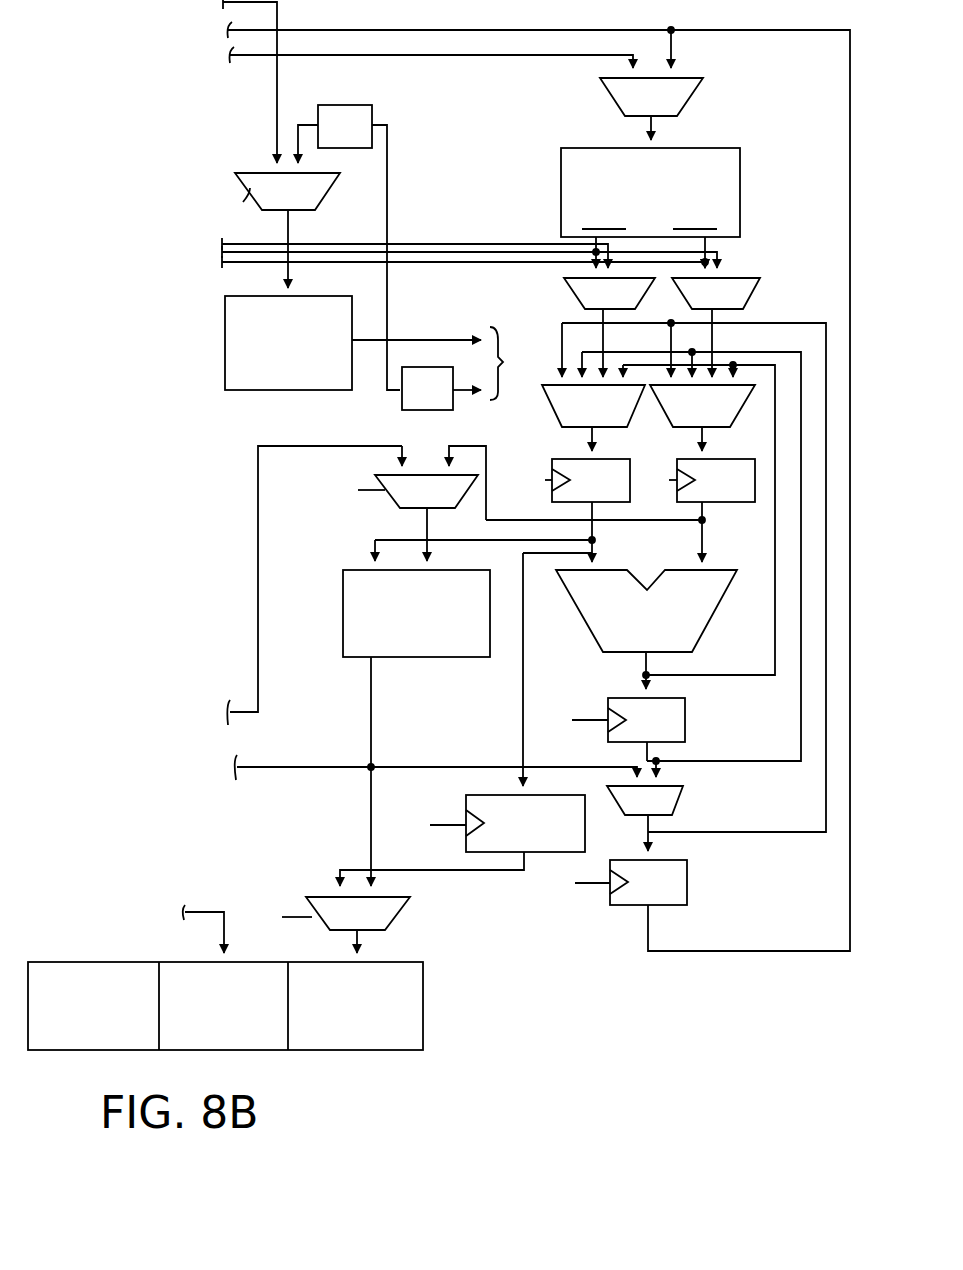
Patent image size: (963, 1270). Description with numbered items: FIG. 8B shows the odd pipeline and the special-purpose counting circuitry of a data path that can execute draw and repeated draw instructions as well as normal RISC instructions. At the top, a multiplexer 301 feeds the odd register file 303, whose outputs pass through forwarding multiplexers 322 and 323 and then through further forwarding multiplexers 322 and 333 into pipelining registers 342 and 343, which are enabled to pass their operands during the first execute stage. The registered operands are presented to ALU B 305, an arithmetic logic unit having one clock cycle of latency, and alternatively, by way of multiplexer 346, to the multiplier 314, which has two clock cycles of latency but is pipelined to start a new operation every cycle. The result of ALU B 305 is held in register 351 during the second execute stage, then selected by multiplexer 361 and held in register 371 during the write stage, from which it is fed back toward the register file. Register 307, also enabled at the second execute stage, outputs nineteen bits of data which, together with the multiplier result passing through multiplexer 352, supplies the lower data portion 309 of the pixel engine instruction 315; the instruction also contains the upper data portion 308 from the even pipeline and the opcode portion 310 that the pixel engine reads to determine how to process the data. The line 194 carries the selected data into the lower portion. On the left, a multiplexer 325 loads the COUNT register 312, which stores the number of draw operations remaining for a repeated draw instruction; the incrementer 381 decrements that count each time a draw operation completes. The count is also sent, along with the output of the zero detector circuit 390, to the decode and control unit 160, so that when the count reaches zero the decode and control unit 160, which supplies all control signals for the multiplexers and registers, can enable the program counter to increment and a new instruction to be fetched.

The decode and control unit 160 is at (497, 368).
The output line 194 is at (336, 946).
The multiplexer 301 is at (688, 108).
The odd register file 303 is at (740, 162).
The ALU B 305 is at (646, 629).
The register 307 is at (570, 851).
The upper data portion 308 is at (265, 1042).
The lower portion 309 is at (398, 1042).
The opcode portion 310 is at (135, 1042).
The COUNT register 312 is at (326, 383).
The multiplier 314 is at (405, 653).
The pixel engine instruction 315 is at (309, 977).
The multiplexer 322 is at (568, 294).
The multiplexer 323 is at (755, 292).
The multiplexer 325 is at (327, 190).
The multiplexer 333 is at (745, 406).
The register 342 is at (606, 460).
The register 343 is at (705, 460).
The multiplexer 346 is at (468, 500).
The register 351 is at (688, 718).
The multiplexer 352 is at (354, 929).
The multiplexer 361 is at (680, 804).
The register 371 is at (690, 880).
The incrementer 381 is at (332, 105).
The zero detector circuit 390 is at (432, 367).